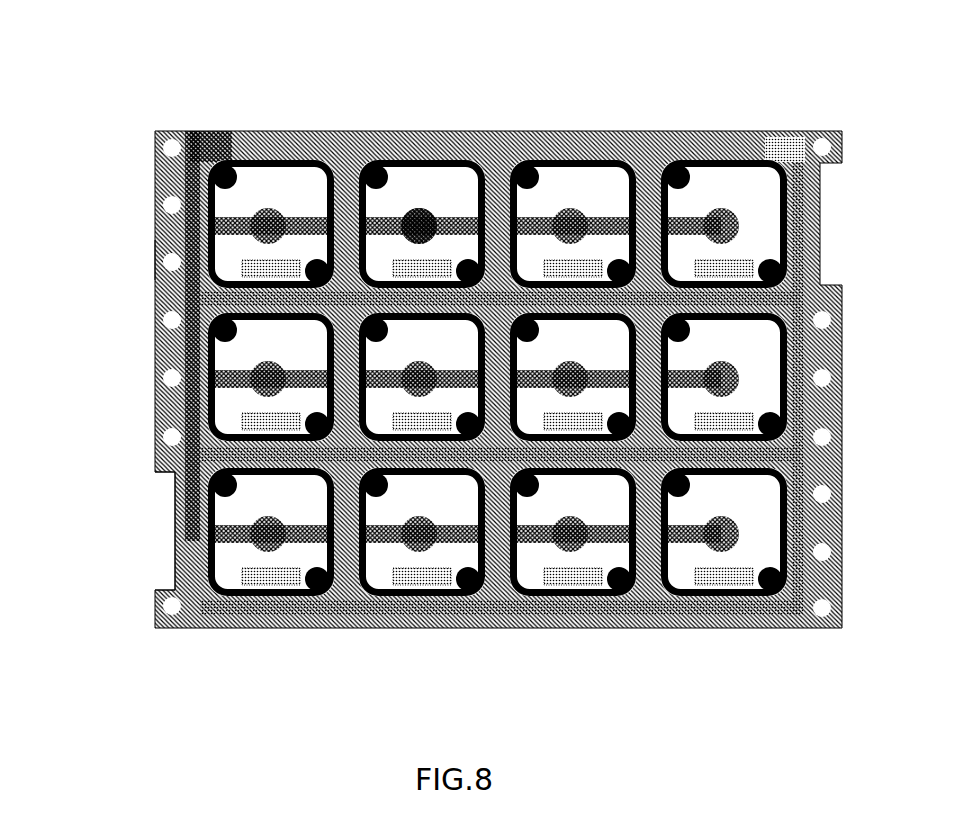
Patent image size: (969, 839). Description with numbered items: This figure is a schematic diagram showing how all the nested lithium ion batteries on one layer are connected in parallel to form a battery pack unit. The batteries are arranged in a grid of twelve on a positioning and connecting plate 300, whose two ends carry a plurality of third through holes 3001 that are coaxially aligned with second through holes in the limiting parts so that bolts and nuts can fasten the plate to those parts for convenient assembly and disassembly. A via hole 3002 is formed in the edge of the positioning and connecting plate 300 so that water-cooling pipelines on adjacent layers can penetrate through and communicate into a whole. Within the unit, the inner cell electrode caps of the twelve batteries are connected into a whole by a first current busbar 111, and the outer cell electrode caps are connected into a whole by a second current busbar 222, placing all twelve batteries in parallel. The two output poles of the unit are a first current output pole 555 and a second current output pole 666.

The positioning and connecting plate 300 is at (565, 133).
The first current busbar 111 is at (393, 222).
The second current busbar 222 is at (620, 604).
The first current output pole 555 is at (218, 133).
The second current output pole 666 is at (775, 142).
The third through hole 3001 is at (156, 256).
The via hole 3002 is at (165, 528).